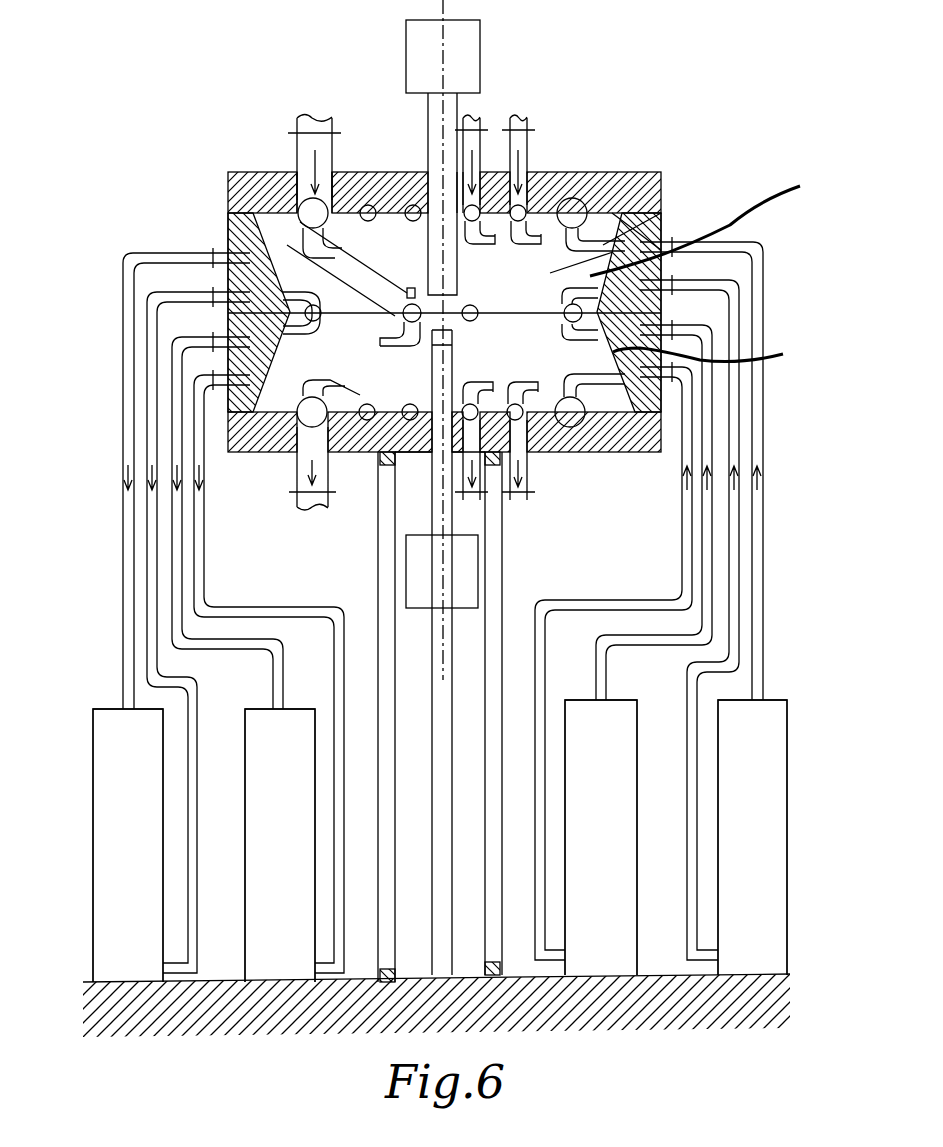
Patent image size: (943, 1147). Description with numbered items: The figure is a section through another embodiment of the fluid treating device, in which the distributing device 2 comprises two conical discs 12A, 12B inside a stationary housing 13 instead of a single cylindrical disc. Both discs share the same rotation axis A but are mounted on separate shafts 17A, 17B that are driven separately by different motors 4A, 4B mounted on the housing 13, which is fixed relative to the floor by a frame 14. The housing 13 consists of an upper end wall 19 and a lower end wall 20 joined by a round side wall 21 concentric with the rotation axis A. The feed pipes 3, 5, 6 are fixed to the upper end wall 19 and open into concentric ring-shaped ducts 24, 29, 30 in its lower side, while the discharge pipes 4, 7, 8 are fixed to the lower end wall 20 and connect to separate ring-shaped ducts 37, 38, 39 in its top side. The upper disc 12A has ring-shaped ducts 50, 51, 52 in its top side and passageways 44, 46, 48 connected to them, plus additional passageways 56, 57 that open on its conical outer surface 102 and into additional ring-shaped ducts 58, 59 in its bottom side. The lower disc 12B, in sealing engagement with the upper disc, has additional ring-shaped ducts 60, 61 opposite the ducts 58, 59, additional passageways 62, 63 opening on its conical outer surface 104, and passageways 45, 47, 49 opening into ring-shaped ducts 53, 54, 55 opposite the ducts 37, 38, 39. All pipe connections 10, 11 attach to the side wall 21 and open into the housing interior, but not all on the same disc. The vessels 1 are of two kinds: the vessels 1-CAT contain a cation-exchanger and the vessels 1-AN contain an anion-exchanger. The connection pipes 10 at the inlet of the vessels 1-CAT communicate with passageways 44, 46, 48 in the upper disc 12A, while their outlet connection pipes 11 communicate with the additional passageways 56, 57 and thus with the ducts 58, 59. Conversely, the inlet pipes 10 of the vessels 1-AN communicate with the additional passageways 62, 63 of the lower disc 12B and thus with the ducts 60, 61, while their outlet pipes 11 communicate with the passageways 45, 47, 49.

The vessel 1 is at (93, 770).
The cation-exchanger vessel 1-CAT is at (85, 982).
The anion-exchanger vessel 1-AN is at (243, 982).
The distributing device 2 is at (307, 95).
The feed pipe 3 is at (297, 123).
The discharge pipe 4 is at (300, 505).
The motor 4A is at (462, 60).
The motor 4B is at (478, 583).
The feed pipe 5 is at (481, 118).
The feed pipe 6 is at (527, 120).
The discharge pipe 7 is at (482, 502).
The discharge pipe 8 is at (527, 512).
The connection pipe 10 is at (123, 532).
The connection pipe 11 is at (134, 562).
The upper conical disc 12A is at (530, 320).
The lower conical disc 12B is at (610, 252).
The housing 13 is at (757, 141).
The frame 14 is at (503, 615).
The shaft 17A is at (445, 128).
The shaft 17B is at (425, 652).
The upper end wall 19 is at (625, 165).
The lower end wall 20 is at (598, 470).
The side wall 21 is at (668, 310).
The ring-shaped duct 24 is at (585, 200).
The ring-shaped duct 29 is at (498, 200).
The ring-shaped duct 30 is at (545, 200).
The ring-shaped duct 37 is at (290, 462).
The ring-shaped duct 38 is at (382, 470).
The ring-shaped duct 39 is at (375, 462).
The passageway 44 is at (245, 285).
The passageway 45 is at (250, 398).
The passageway 46 is at (500, 178).
The passageway 47 is at (516, 458).
The passageway 48 is at (570, 200).
The passageway 49 is at (536, 440).
The ring-shaped duct 50 is at (318, 215).
The ring-shaped duct 51 is at (413, 205).
The ring-shaped duct 52 is at (370, 205).
The ring-shaped duct 53 is at (240, 430).
The ring-shaped duct 54 is at (300, 400).
The ring-shaped duct 55 is at (305, 420).
The additional passageway 56 is at (122, 253).
The additional passageway 57 is at (407, 288).
The additional ring-shaped duct 58 is at (285, 298).
The additional ring-shaped duct 59 is at (300, 200).
The additional ring-shaped duct 60 is at (300, 322).
The additional ring-shaped duct 61 is at (308, 238).
The additional passageway 62 is at (235, 332).
The additional passageway 63 is at (330, 250).
The conical outer surface 102 is at (723, 222).
The conical outer surface 104 is at (730, 351).
The rotation axis A is at (443, 40).